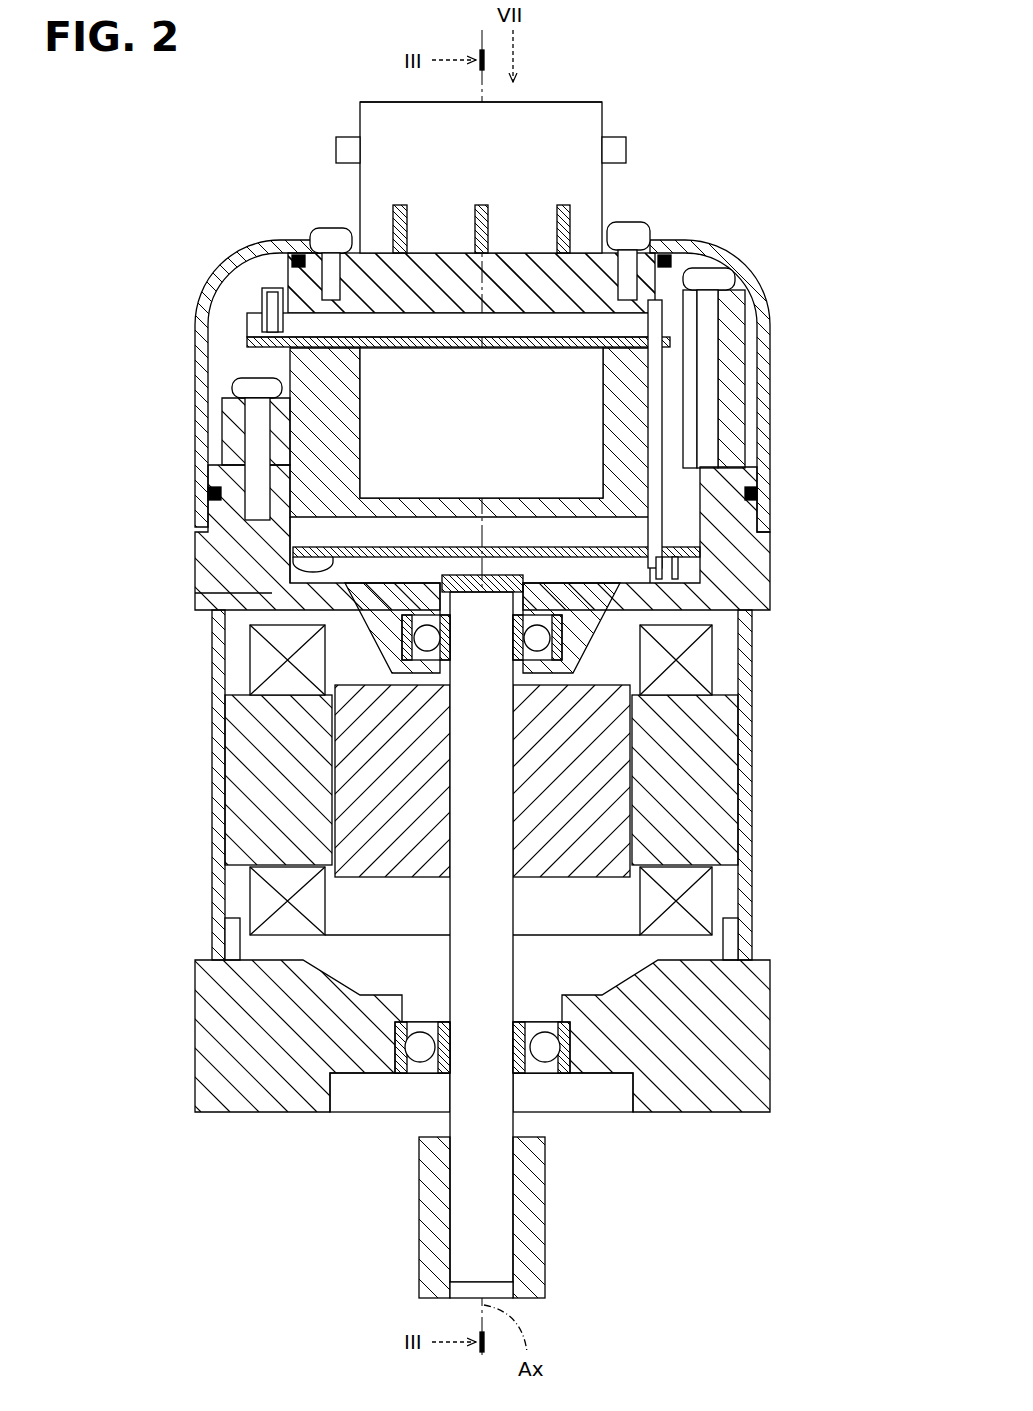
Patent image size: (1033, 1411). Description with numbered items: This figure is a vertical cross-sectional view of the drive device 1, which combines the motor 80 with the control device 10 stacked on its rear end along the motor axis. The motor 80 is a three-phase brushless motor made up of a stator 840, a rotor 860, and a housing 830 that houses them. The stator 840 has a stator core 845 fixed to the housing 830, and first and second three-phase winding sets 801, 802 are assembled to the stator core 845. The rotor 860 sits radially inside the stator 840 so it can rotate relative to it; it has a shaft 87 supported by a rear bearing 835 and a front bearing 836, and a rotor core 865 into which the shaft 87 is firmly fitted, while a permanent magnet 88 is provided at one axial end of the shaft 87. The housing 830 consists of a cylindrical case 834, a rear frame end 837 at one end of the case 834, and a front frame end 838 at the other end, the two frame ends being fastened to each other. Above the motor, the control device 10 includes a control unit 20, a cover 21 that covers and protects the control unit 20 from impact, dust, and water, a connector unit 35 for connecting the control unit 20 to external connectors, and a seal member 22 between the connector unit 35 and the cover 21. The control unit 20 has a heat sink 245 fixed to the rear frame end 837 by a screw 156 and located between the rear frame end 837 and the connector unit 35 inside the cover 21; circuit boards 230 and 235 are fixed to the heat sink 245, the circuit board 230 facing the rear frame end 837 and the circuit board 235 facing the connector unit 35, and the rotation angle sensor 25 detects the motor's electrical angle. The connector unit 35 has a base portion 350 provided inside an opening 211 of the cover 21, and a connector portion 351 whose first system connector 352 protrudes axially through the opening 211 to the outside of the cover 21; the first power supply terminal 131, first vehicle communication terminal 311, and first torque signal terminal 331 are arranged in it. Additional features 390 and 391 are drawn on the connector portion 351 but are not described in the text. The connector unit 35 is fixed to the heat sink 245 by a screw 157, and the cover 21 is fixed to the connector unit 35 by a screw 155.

The drive device 1 is at (222, 183).
The control device 10 is at (228, 240).
The control unit 20 is at (240, 362).
The cover 21 is at (768, 335).
The seal member 22 is at (662, 250).
The rotation angle sensor 25 is at (445, 585).
The connector unit 35 is at (742, 296).
The motor 80 is at (195, 1022).
The shaft 87 is at (470, 840).
The permanent magnet 88 is at (428, 636).
The first power supply terminal 131 is at (262, 312).
The screw 155 is at (318, 238).
The screw 156 is at (245, 392).
The screw 157 is at (735, 266).
The opening 211 is at (367, 212).
The circuit board 230 is at (212, 555).
The circuit board 235 is at (250, 342).
The heat sink 245 is at (330, 435).
The first vehicle communication terminal 311 is at (668, 533).
The first torque signal terminal 331 is at (668, 560).
The base portion 350 is at (302, 284).
The connector portion 351 is at (358, 100).
The first system connector 352 is at (556, 108).
The connector pin 390 is at (572, 213).
The locking projection 391 is at (338, 152).
The first winding set 801 is at (262, 665).
The second winding set 802 is at (700, 662).
The housing 830 is at (756, 710).
The case 834 is at (750, 745).
The rear bearing 835 is at (720, 625).
The front bearing 836 is at (547, 1047).
The rear frame end 837 is at (740, 568).
The front frame end 838 is at (740, 1070).
The stator 840 is at (252, 883).
The stator core 845 is at (272, 752).
The rotor 860 is at (350, 922).
The rotor core 865 is at (360, 800).